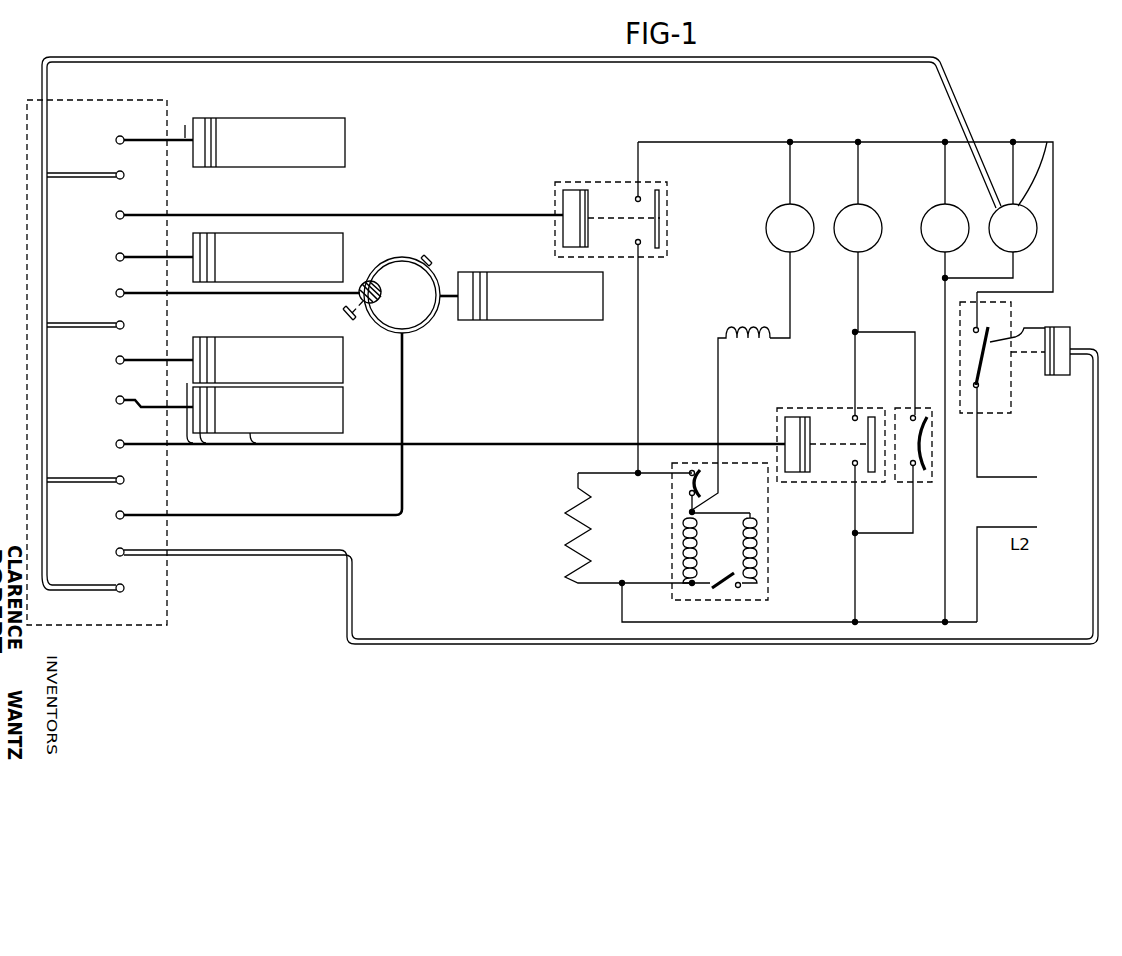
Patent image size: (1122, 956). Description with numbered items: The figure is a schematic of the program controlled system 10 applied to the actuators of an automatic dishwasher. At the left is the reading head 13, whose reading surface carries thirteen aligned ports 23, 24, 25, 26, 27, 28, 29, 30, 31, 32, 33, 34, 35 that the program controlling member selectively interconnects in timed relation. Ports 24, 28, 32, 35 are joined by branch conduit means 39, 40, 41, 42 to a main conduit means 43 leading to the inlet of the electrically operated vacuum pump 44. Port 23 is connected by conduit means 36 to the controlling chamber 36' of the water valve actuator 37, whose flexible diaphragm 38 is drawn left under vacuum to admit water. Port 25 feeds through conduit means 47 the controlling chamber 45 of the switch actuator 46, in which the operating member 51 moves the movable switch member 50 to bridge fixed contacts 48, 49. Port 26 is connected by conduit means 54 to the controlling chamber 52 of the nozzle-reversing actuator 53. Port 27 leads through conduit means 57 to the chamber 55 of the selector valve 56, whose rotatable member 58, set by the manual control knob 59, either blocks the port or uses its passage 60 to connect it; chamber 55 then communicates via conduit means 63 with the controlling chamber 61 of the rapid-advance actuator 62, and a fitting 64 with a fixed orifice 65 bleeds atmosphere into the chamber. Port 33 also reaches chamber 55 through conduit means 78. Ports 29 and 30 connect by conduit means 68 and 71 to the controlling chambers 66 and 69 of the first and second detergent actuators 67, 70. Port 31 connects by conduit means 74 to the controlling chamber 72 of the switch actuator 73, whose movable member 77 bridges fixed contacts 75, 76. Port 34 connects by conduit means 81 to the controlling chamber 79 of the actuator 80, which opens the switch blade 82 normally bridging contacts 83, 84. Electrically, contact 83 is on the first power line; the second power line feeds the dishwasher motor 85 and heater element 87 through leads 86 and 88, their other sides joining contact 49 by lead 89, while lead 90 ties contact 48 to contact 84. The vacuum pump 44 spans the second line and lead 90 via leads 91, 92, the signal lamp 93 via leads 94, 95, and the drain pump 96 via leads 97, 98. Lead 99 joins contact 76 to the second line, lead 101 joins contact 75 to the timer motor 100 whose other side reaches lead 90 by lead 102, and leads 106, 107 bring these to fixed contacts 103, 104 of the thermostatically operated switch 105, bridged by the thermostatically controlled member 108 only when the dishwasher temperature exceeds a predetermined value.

The program controlled system 10 is at (981, 70).
The reading head 13 is at (109, 100).
The port 23 is at (123, 137).
The port 24 is at (123, 172).
The port 25 is at (123, 212).
The port 26 is at (123, 254).
The port 27 is at (123, 290).
The port 28 is at (124, 321).
The port 29 is at (124, 356).
The port 30 is at (124, 397).
The port 31 is at (124, 440).
The port 32 is at (130, 470).
The port 33 is at (124, 512).
The port 34 is at (114, 552).
The port 35 is at (126, 571).
The conduit means 36 is at (185, 119).
The controlling chamber 36' is at (207, 100).
The actuator 37 is at (293, 118).
The flexible diaphragm 38 is at (213, 120).
The branch conduit means 39 is at (65, 173).
The branch conduit means 40 is at (76, 323).
The branch conduit means 41 is at (74, 482).
The branch conduit means 42 is at (79, 588).
The main conduit means 43 is at (512, 57).
The vacuum pump 44 is at (1028, 227).
The controlling chamber 45 is at (575, 198).
The actuator 46 is at (610, 178).
The conduit means 47 is at (503, 215).
The fixed contact 48 is at (641, 195).
The fixed contact 49 is at (641, 250).
The movable switch member 50 is at (662, 215).
The operating member 51 is at (590, 223).
The controlling chamber 52 is at (206, 236).
The actuator 53 is at (277, 235).
The conduit means 54 is at (177, 263).
The chamber 55 is at (413, 265).
The selector valve 56 is at (393, 258).
The conduit means 57 is at (290, 311).
The rotatable member 58 is at (385, 288).
The control knob 59 is at (349, 318).
The passage 60 is at (385, 305).
The controlling chamber 61 is at (468, 280).
The actuator 62 is at (525, 268).
The conduit means 63 is at (450, 305).
The fitting 64 is at (432, 262).
The fixed orifice 65 is at (434, 263).
The controlling chamber 66 is at (200, 343).
The actuator 67 is at (240, 336).
The conduit means 68 is at (181, 352).
The controlling chamber 69 is at (200, 436).
The actuator 70 is at (253, 433).
The conduit means 71 is at (187, 413).
The controlling chamber 72 is at (790, 417).
The actuator 73 is at (812, 410).
The conduit means 74 is at (660, 443).
The fixed contact 75 is at (857, 415).
The fixed contact 76 is at (852, 475).
The movable member 77 is at (878, 418).
The conduit means 78 is at (403, 399).
The controlling chamber 79 is at (1058, 338).
The actuator 80 is at (1046, 375).
The conduit means 81 is at (1016, 641).
The switch blade 82 is at (1018, 339).
The fixed contact 83 is at (996, 383).
The fixed contact 84 is at (980, 332).
The dishwasher motor 85 is at (770, 527).
The lead 86 is at (653, 583).
The heater element 87 is at (590, 527).
The lead 88 is at (597, 583).
The lead 89 is at (640, 348).
The lead 90 is at (880, 142).
The lead 91 is at (951, 283).
The lead 92 is at (1012, 188).
The signal lamp 93 is at (957, 213).
The lead 94 is at (943, 267).
The lead 95 is at (948, 195).
The drain pump 96 is at (782, 240).
The lead 97 is at (717, 353).
The lead 98 is at (794, 150).
The lead 99 is at (856, 515).
The timer motor 100 is at (872, 238).
The lead 101 is at (862, 311).
The lead 102 is at (860, 166).
The fixed contact 103 is at (916, 467).
The fixed contact 104 is at (916, 416).
The thermostatically operated switch 105 is at (932, 458).
The lead 106 is at (886, 537).
The lead 107 is at (917, 347).
The thermostatically controlled member 108 is at (930, 427).